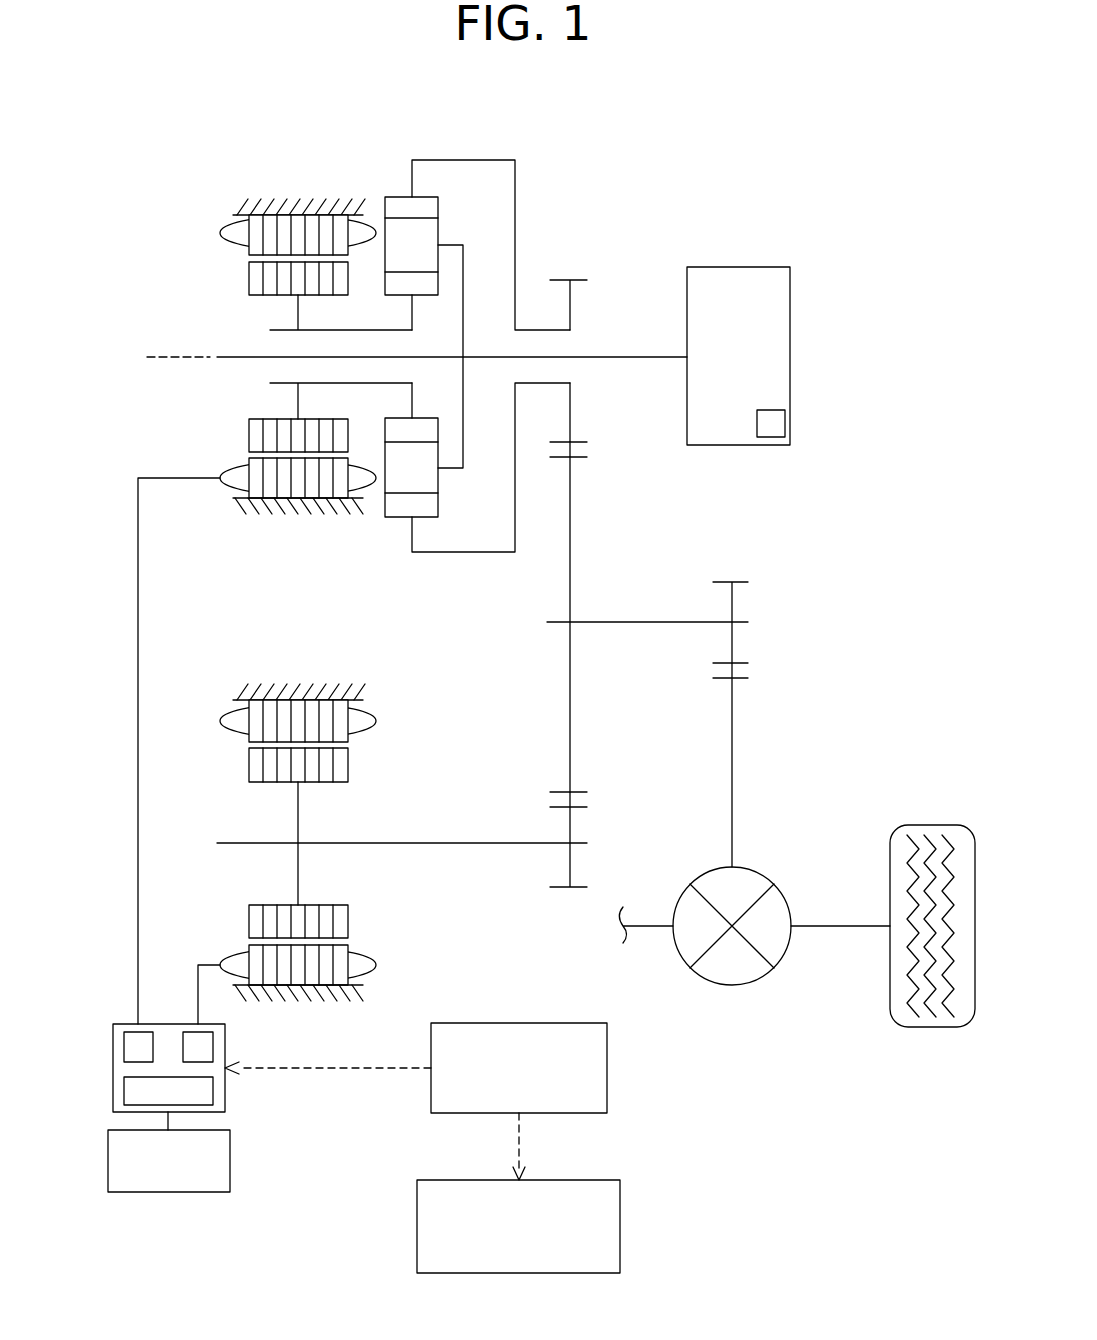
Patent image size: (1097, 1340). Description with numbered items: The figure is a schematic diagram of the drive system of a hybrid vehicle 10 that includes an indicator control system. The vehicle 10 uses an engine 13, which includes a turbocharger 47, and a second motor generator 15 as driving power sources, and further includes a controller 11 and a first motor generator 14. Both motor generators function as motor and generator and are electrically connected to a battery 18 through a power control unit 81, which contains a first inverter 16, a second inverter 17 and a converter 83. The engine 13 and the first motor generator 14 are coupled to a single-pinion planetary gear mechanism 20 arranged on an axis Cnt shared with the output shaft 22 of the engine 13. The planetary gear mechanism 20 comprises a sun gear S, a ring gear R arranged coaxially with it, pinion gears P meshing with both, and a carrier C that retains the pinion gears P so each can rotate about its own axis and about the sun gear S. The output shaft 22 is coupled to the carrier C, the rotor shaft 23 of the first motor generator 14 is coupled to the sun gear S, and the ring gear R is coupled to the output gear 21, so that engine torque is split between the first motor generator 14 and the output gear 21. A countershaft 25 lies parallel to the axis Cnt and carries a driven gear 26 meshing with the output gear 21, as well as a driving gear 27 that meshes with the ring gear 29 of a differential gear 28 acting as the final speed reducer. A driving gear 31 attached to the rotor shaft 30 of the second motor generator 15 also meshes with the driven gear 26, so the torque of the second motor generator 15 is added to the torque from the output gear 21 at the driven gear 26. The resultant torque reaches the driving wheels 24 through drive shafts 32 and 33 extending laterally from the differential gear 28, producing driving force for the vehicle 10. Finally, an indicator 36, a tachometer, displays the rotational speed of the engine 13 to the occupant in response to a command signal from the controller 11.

The vehicle 10 is at (725, 190).
The controller 11 is at (529, 1022).
The engine 13 is at (790, 299).
The first motor generator 14 is at (223, 205).
The second motor generator 15 is at (223, 695).
The first inverter 16 is at (124, 1038).
The second inverter 17 is at (213, 1037).
The battery 18 is at (218, 1130).
The planetary gear mechanism 20 is at (373, 162).
The output gear 21 is at (579, 440).
The output shaft 22 is at (652, 355).
The rotor shaft 23 is at (270, 328).
The driving wheels 24 is at (929, 825).
The countershaft 25 is at (635, 625).
The driven gear 26 is at (579, 459).
The driving gear 27 is at (748, 585).
The differential gear 28 is at (757, 870).
The ring gear 29 is at (748, 680).
The rotor shaft 30 is at (230, 843).
The driving gear 31 is at (587, 808).
The drive shaft 32 is at (645, 930).
The drive shaft 33 is at (838, 926).
The indicator 36 is at (563, 1180).
The turbocharger 47 is at (785, 421).
The power control unit 81 is at (159, 1066).
The converter 83 is at (124, 1094).
The ring gear R is at (425, 203).
The pinion gears P is at (393, 250).
The sun gear S is at (425, 290).
The carrier C is at (465, 265).
The axis Cnt is at (163, 355).